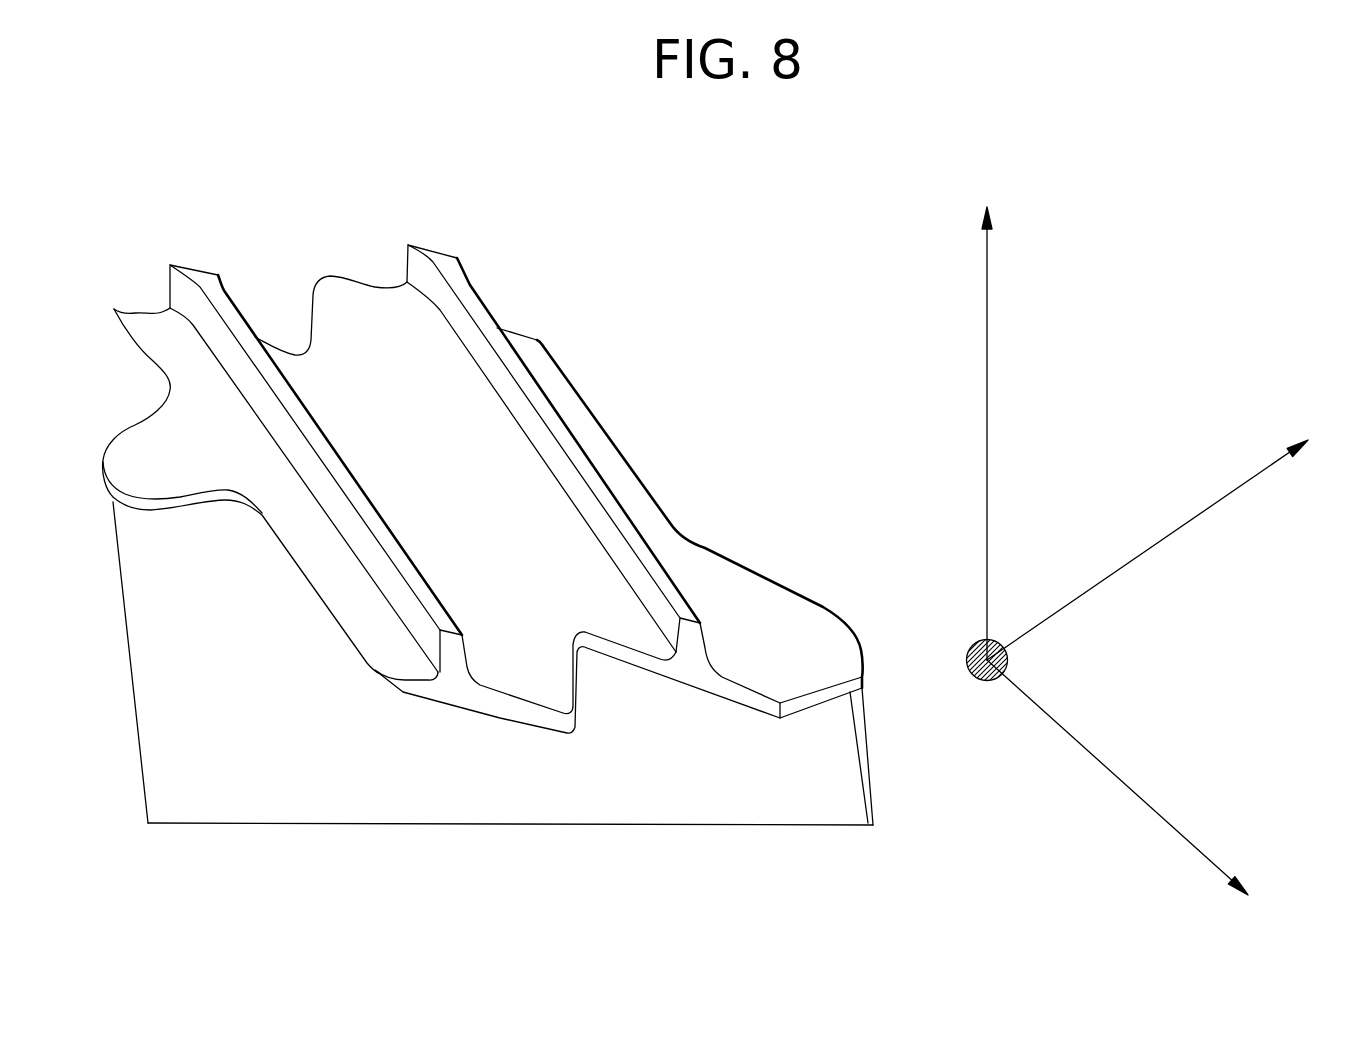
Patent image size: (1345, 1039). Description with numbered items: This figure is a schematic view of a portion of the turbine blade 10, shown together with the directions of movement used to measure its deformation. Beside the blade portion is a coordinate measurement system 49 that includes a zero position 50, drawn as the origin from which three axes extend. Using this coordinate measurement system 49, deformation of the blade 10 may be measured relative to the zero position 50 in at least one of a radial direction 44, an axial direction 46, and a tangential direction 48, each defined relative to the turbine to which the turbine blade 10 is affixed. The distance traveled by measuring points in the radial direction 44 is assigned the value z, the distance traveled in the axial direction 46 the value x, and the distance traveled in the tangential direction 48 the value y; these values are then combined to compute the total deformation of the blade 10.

The turbine blade 10 is at (353, 345).
The radial direction 44 is at (987, 297).
The axial direction 46 is at (1160, 813).
The tangential direction 48 is at (1220, 500).
The coordinate measurement system 49 is at (1153, 543).
The zero position 50 is at (970, 678).